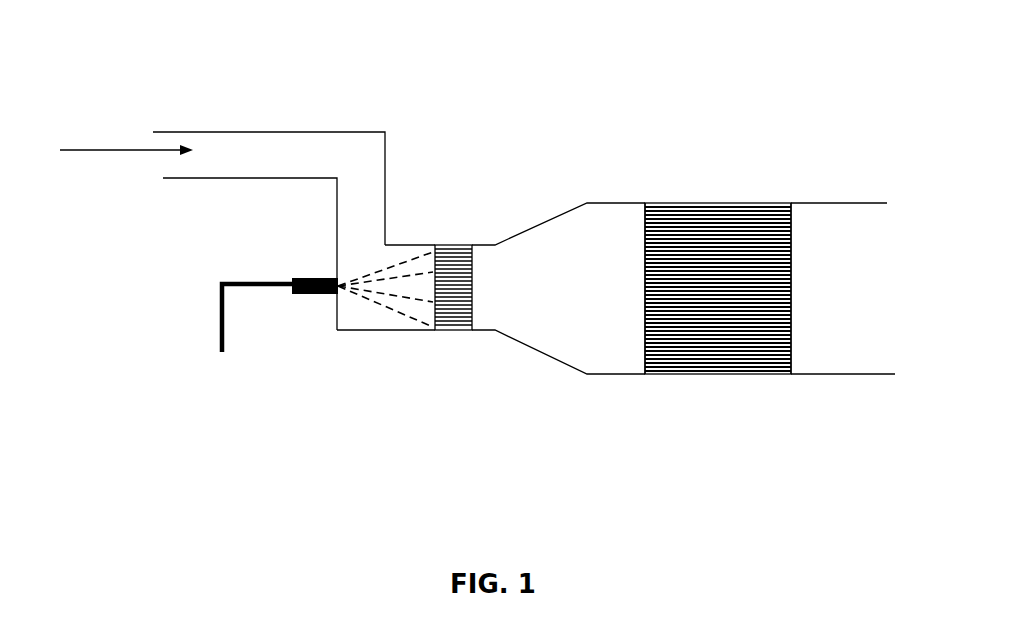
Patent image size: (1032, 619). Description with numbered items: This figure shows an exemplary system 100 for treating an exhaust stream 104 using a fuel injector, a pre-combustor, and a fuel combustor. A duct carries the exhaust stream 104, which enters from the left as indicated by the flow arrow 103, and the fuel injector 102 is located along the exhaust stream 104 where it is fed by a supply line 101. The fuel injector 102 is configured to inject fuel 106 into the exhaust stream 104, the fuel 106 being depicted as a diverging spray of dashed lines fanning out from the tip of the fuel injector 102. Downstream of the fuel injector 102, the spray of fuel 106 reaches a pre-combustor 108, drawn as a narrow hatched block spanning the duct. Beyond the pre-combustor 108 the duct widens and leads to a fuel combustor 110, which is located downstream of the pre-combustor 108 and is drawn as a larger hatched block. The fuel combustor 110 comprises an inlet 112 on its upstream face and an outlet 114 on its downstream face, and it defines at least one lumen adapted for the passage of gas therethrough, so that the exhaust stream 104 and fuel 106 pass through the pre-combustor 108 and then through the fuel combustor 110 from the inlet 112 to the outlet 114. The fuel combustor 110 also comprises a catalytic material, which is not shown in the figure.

The system 100 is at (680, 97).
The reductant supply pipe 101 is at (220, 308).
The fuel injector 102 is at (308, 293).
The exhaust gas flow 103 is at (126, 134).
The exhaust stream 104 is at (237, 162).
The fuel 106 is at (412, 305).
The pre-combustor 108 is at (452, 303).
The fuel combustor 110 is at (707, 307).
The inlet 112 is at (645, 276).
The outlet 114 is at (791, 275).